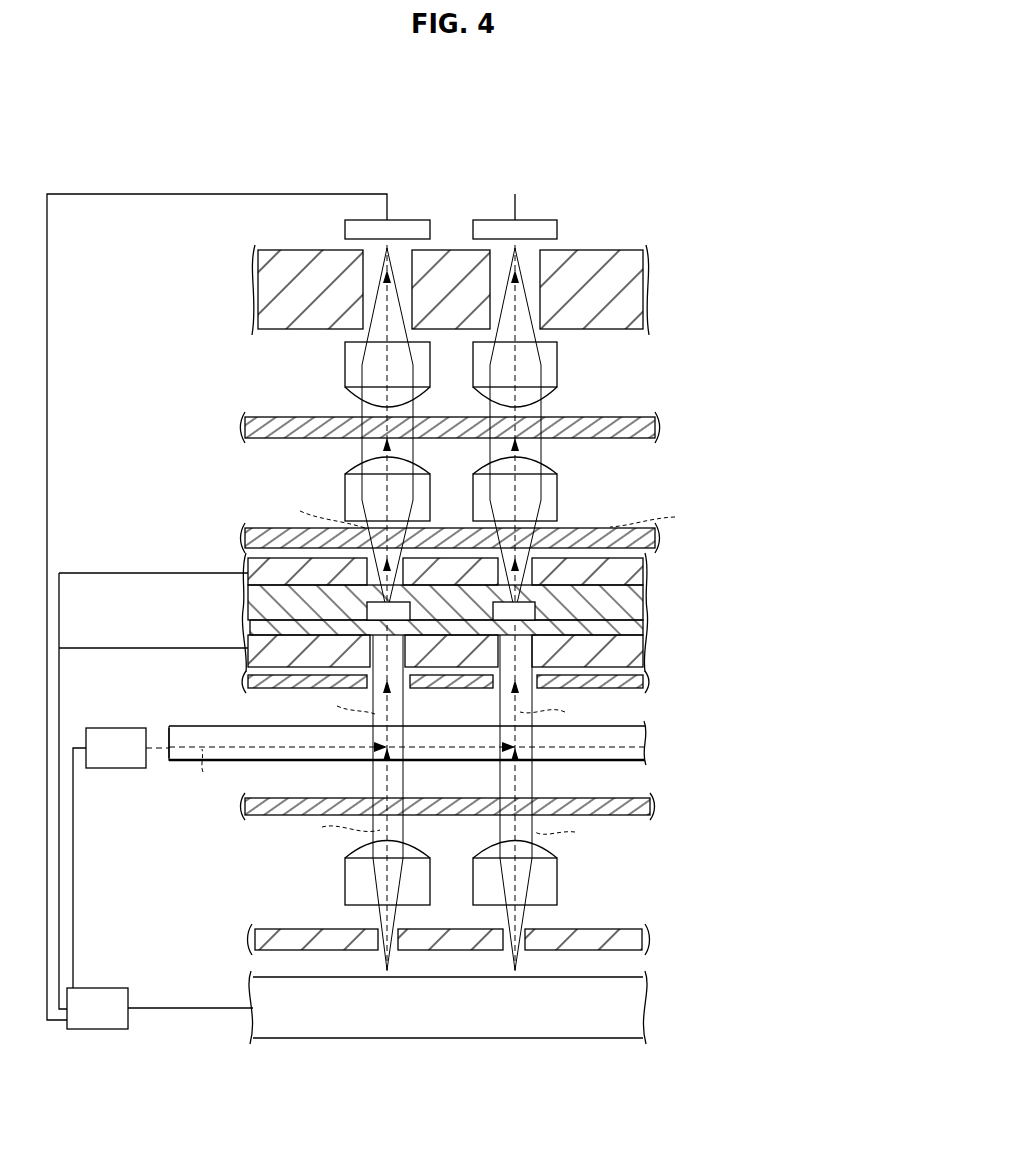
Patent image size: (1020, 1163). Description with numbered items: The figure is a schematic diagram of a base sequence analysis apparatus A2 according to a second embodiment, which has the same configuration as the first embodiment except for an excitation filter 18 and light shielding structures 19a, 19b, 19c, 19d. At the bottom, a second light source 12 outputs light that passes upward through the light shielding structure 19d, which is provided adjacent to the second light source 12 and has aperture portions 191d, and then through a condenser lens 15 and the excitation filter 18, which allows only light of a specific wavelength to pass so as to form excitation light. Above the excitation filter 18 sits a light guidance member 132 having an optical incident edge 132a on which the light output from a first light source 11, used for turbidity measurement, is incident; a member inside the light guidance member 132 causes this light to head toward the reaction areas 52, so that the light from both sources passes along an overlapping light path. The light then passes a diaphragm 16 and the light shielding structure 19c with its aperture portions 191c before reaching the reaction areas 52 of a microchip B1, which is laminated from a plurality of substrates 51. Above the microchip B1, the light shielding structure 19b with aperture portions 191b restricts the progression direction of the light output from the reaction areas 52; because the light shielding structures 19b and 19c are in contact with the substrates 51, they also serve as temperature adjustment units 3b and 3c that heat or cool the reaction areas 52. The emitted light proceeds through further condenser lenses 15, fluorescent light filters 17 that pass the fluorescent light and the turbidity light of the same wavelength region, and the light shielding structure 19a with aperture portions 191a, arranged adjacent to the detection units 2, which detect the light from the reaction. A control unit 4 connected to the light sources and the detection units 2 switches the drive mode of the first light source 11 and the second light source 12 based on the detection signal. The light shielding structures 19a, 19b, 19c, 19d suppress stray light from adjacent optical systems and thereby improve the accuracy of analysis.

The base sequence analysis apparatus A2 is at (585, 62).
The detection units 2 is at (487, 228).
The aperture portion 191a is at (532, 256).
The light shielding structure 19a is at (636, 288).
The condenser lens 15 is at (350, 372).
The fluorescent light filter 17 is at (245, 538).
The aperture portion 191b is at (498, 585).
The temperature adjustment unit 3b is at (536, 601).
The light shielding structure 19b is at (636, 575).
The microchip B1 is at (451, 608).
The substrates 51 is at (252, 626).
The reaction areas 52 is at (532, 609).
The temperature adjustment unit 3c is at (544, 654).
The light shielding structure 19c is at (640, 650).
The diaphragm 16 is at (250, 681).
The aperture portion 191c is at (532, 670).
The light guidance member 132 is at (496, 816).
The optical incident edge 132a is at (157, 752).
The first light source 11 is at (113, 755).
The excitation filter 18 is at (650, 808).
The light shielding structure 19d is at (630, 944).
The aperture portion 191d is at (510, 950).
The second light source 12 is at (585, 1015).
The control unit 4 is at (94, 1014).